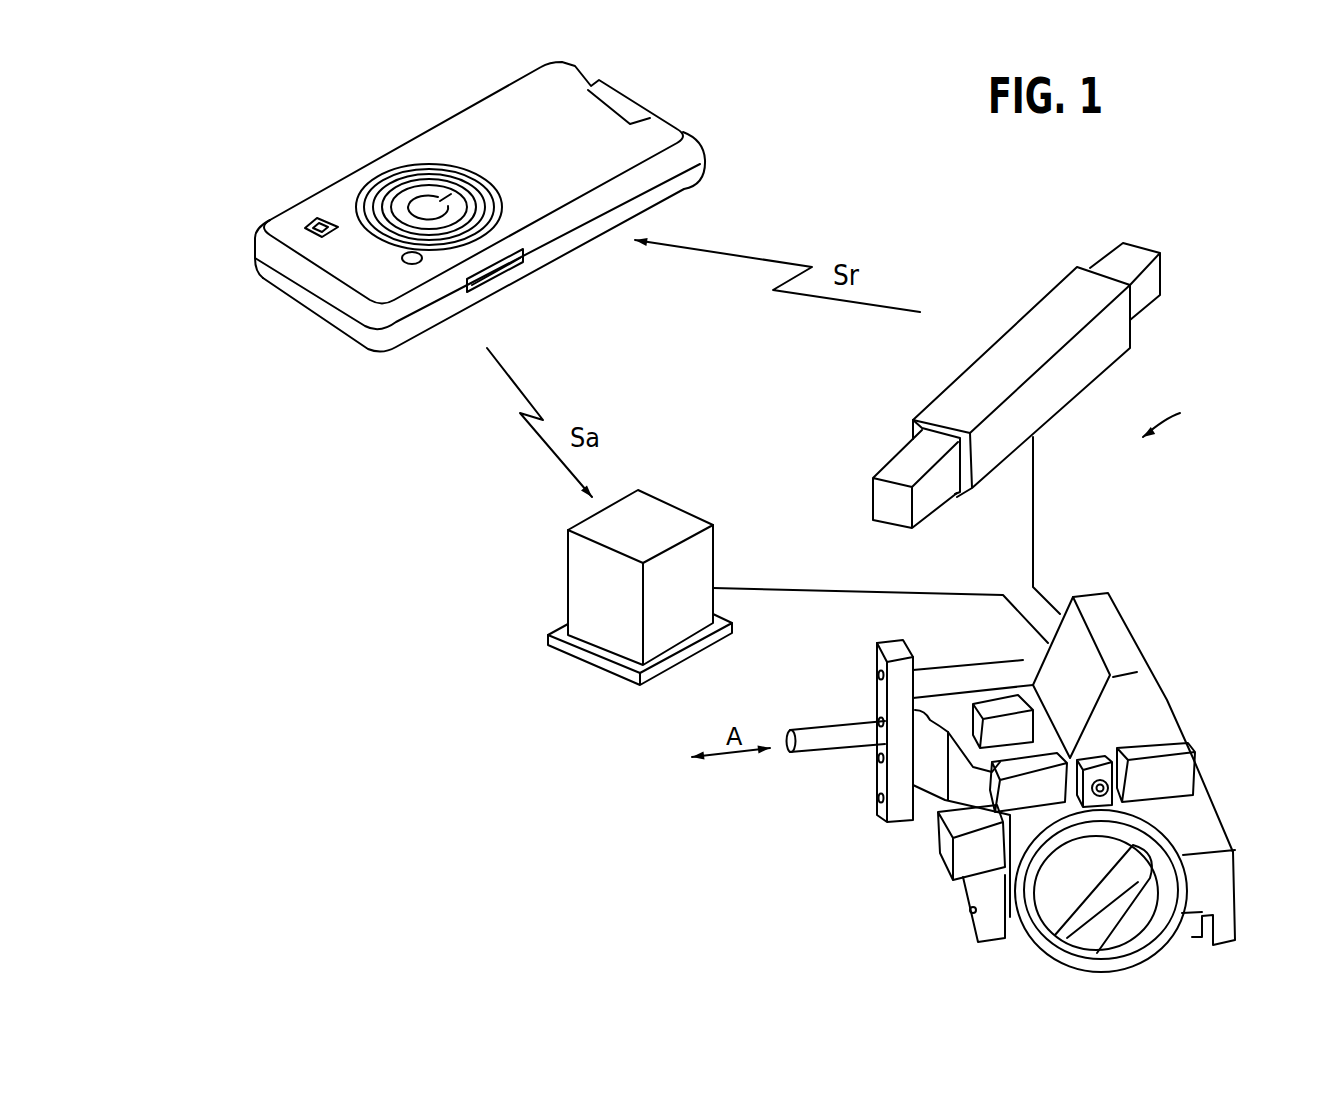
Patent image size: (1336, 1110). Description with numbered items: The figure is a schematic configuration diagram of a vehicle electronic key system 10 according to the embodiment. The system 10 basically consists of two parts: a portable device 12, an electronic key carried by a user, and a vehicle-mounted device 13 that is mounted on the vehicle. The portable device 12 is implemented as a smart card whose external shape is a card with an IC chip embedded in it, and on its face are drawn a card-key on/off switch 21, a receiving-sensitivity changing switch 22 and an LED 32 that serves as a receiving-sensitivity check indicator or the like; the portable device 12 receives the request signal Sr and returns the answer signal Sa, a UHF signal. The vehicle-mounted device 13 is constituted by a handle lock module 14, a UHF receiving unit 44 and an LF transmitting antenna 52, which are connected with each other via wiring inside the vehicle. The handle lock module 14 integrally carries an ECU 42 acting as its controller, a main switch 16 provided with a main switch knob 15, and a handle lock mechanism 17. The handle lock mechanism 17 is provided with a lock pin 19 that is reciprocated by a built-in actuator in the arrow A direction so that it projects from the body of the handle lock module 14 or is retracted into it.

The vehicle electronic key system 10 is at (885, 205).
The portable device 12 is at (495, 128).
The vehicle-mounted device 13 is at (1187, 416).
The handle lock module 14 is at (1107, 633).
The main switch knob 15 is at (1137, 882).
The main switch 16 is at (1163, 843).
The handle lock mechanism 17 is at (842, 757).
The lock pin 19 is at (838, 732).
The card-key on/off switch 21 is at (400, 197).
The receiving-sensitivity changing switch 22 is at (320, 217).
The LED 32 is at (412, 266).
The ECU 42 is at (983, 710).
The UHF receiving unit 44 is at (663, 528).
The LF transmitting antenna 52 is at (997, 357).